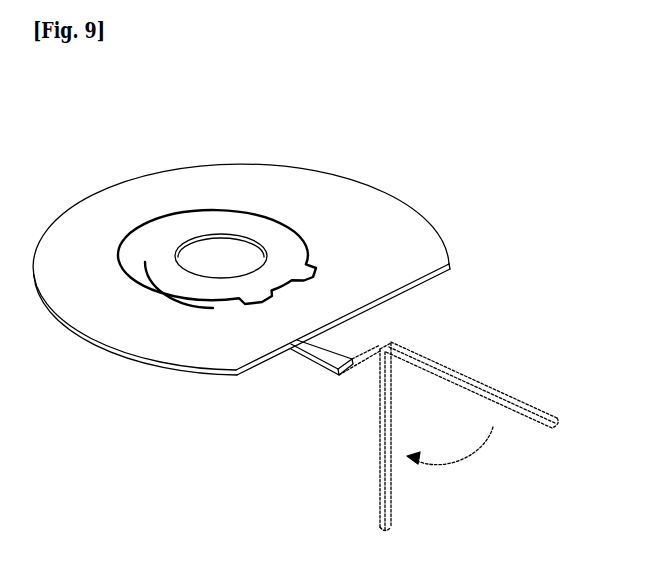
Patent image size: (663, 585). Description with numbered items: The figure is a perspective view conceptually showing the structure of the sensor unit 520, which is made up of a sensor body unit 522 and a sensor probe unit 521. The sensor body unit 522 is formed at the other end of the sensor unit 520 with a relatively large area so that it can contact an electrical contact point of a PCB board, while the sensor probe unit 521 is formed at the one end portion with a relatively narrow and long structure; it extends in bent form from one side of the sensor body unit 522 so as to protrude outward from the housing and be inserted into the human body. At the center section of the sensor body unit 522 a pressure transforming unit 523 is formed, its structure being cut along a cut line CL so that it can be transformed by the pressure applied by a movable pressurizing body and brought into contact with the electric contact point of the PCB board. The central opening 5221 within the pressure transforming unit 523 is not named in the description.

The sensor unit 520 is at (458, 233).
The sensor probe unit 521 is at (376, 443).
The sensor body unit 522 is at (364, 232).
The pressure transforming unit 523 is at (160, 233).
The center hole 5221 is at (225, 259).
The cut line CL is at (278, 218).